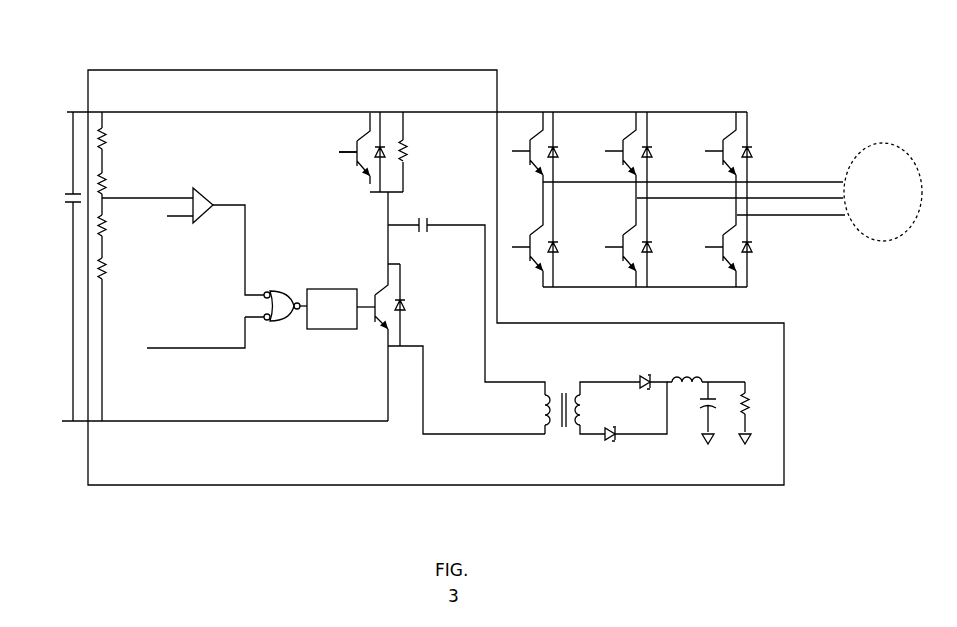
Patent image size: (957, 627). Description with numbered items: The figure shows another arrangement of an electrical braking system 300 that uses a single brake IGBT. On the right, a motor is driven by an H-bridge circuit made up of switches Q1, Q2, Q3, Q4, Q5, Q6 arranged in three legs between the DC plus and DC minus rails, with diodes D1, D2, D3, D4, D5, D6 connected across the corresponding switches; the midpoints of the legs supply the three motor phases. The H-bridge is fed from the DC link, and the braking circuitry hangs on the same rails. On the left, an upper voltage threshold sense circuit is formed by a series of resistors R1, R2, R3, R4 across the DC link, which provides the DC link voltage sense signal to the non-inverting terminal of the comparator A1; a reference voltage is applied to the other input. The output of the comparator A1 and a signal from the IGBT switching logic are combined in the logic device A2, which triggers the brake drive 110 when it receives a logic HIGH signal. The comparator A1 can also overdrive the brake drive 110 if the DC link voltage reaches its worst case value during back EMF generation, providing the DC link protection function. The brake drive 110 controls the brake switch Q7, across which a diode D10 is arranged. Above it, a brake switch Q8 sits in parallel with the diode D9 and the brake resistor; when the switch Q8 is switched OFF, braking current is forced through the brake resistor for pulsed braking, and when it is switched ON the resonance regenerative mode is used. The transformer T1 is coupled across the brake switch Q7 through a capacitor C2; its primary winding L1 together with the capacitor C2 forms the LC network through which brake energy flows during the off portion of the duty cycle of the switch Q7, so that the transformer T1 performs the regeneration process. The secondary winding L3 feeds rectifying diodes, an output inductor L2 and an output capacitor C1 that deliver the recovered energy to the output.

The electrical braking system 300 is at (469, 45).
The brake drive 110 is at (335, 288).
The resistor R1 is at (112, 139).
The resistor R2 is at (112, 183).
The resistor R3 is at (112, 228).
The resistor R4 is at (114, 268).
The comparator A1 is at (204, 201).
The logic device A2 is at (282, 297).
The brake switch Q7 is at (374, 305).
The brake switch Q8 is at (351, 148).
The diode D9 is at (390, 152).
The diode D10 is at (418, 305).
The capacitor C2 is at (424, 218).
The transformer T1 is at (567, 397).
The inductor L1 is at (538, 410).
The inductor L2 is at (687, 369).
The inductor L3 is at (591, 412).
The capacitor C1 is at (719, 413).
The switch Q1 is at (526, 147).
The switch Q2 is at (526, 235).
The switch Q3 is at (619, 147).
The switch Q4 is at (619, 235).
The switch Q5 is at (719, 147).
The switch Q6 is at (719, 235).
The diode D1 is at (566, 152).
The diode D2 is at (660, 152).
The diode D3 is at (760, 152).
The diode D4 is at (566, 247).
The diode D5 is at (660, 247).
The diode D6 is at (760, 247).